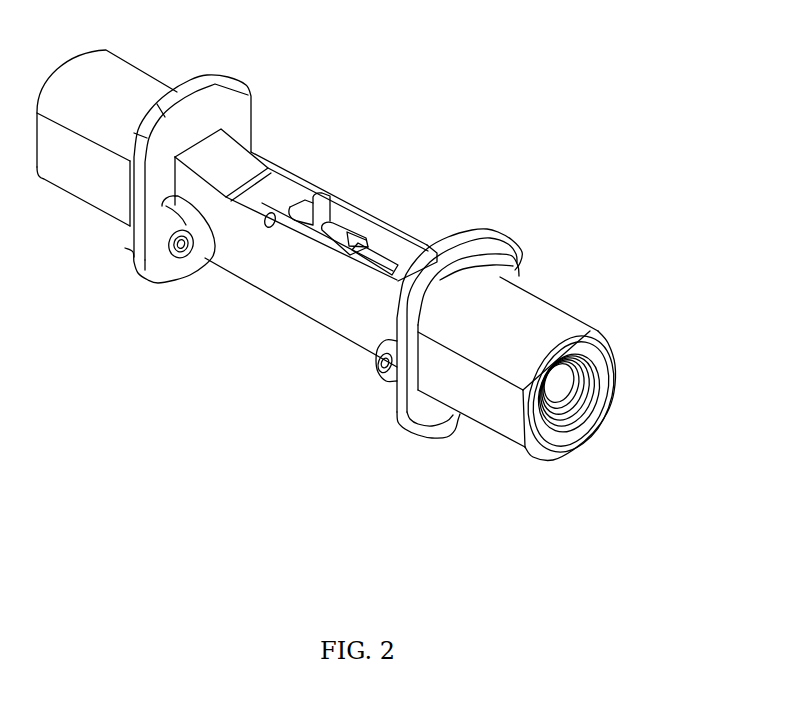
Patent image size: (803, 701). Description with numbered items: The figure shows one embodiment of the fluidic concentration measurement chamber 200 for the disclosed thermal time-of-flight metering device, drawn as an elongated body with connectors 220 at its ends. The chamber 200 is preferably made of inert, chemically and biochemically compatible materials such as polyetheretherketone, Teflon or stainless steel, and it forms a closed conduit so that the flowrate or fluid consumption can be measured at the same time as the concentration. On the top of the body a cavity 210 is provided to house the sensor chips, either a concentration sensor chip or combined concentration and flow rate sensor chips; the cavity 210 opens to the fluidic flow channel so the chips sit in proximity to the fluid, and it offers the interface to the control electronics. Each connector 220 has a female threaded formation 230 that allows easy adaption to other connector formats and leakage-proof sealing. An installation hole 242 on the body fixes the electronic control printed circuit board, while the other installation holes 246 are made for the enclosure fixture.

The fluidic concentration measurement chamber 200 is at (335, 313).
The cavity 210 is at (380, 241).
The connectors 220 is at (509, 318).
The female threaded formation 230 is at (578, 398).
The installation hole 242 is at (263, 228).
The installation holes 246 is at (176, 254).